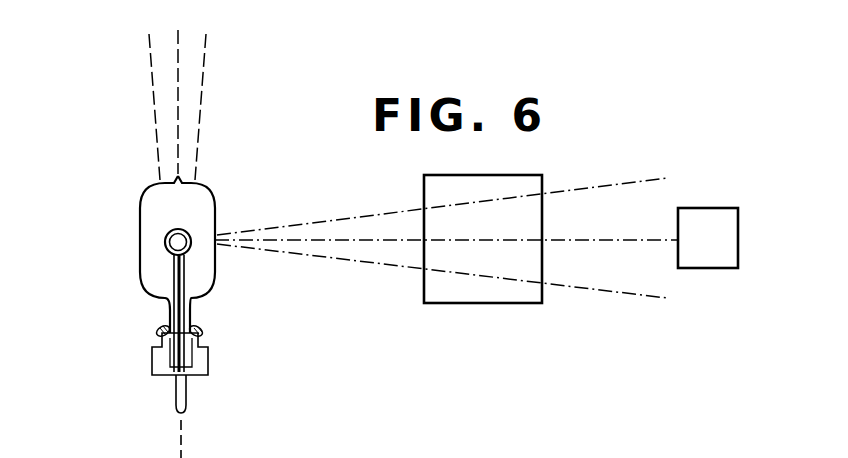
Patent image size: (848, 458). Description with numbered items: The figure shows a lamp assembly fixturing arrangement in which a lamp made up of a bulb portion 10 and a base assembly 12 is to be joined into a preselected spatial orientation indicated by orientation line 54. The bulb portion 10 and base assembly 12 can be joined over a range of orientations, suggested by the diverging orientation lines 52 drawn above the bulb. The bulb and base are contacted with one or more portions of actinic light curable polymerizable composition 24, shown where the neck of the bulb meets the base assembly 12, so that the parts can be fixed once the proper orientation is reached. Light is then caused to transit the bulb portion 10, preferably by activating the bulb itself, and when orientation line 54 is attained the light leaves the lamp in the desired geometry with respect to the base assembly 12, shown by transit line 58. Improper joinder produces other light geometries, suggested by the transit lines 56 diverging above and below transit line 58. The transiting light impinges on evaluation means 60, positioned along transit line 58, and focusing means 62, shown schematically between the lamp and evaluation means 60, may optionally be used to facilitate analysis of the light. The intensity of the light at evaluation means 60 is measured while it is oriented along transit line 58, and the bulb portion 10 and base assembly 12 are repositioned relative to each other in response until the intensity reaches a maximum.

The bulb portion 10 is at (84, 183).
The base assembly 12 is at (152, 360).
The actinic light curable polymerizable composition 24 is at (162, 326).
The orientation lines 52 is at (150, 84).
The orientation line 54 is at (178, 42).
The transit lines 56 is at (288, 225).
The transit line 58 is at (335, 242).
The evaluation means 60 is at (718, 269).
The focusing means 62 is at (518, 304).